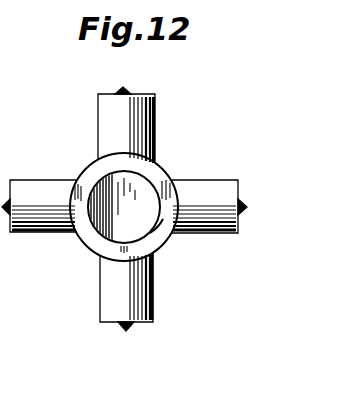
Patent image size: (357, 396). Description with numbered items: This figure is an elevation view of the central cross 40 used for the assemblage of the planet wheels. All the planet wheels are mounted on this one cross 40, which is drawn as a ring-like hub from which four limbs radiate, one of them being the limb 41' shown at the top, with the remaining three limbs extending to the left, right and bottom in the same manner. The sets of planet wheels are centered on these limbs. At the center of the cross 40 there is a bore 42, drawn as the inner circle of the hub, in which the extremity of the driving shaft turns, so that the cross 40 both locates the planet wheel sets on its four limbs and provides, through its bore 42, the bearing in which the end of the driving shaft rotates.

The central cross 40 is at (157, 172).
The limb 41' is at (103, 125).
The bore 42 is at (163, 230).